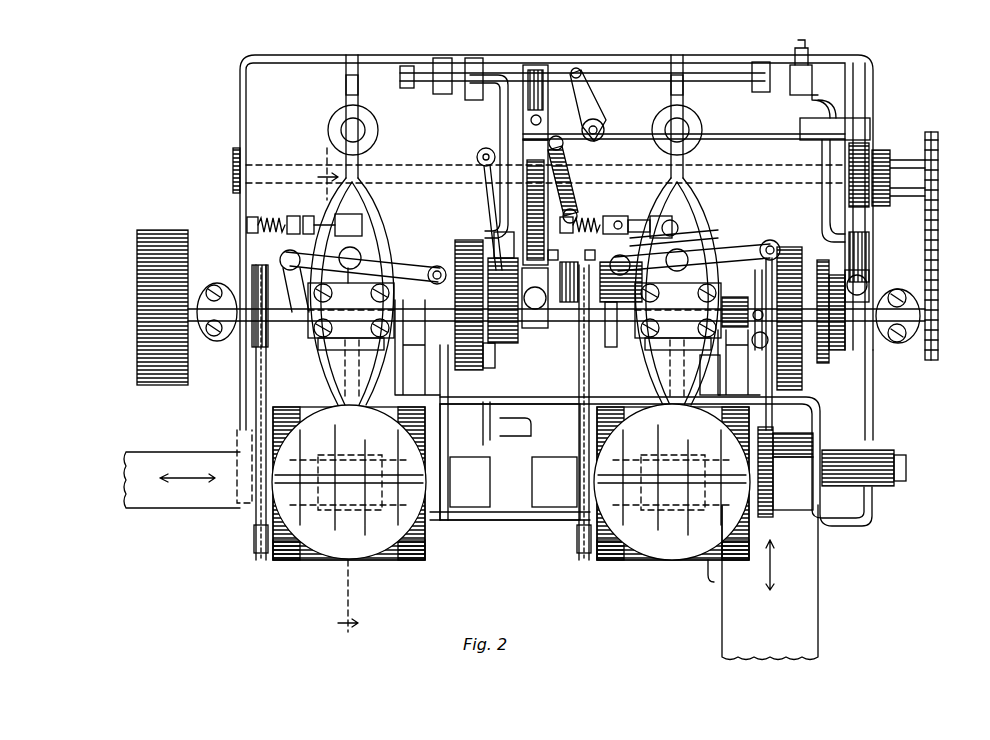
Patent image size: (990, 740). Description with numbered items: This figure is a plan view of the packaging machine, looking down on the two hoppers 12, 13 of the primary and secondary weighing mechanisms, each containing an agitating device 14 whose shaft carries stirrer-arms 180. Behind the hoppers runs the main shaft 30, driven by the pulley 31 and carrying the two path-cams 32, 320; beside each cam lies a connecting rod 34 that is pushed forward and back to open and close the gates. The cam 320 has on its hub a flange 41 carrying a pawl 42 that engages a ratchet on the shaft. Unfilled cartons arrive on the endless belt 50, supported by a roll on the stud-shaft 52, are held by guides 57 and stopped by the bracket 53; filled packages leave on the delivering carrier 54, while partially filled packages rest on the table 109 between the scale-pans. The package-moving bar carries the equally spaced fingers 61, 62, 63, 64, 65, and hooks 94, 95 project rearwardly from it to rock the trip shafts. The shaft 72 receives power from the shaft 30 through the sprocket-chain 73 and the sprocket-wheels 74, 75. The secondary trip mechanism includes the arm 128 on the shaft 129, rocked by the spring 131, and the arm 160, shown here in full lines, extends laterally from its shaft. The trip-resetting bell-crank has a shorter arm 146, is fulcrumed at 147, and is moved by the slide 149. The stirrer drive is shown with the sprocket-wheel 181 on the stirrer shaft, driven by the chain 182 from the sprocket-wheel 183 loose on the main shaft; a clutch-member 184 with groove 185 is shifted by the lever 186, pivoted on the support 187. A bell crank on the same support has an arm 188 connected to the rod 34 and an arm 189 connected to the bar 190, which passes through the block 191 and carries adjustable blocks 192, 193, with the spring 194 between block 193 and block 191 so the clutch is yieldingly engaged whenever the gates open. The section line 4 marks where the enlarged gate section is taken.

The section line 4— 4 is at (337, 398).
The hopper 12 is at (733, 570).
The hopper 13 is at (283, 560).
The agitating device 14 is at (618, 562).
The shaft 30 is at (752, 264).
The pulley 31 is at (155, 388).
The path-cam 32 is at (786, 246).
The connecting rod 34 is at (775, 392).
The flange 41 is at (502, 352).
The pawl 42 is at (504, 262).
The endless belt 50 is at (806, 637).
The stud-shaft 52 is at (906, 463).
The bracket 53 is at (822, 440).
The delivering carrier 54 is at (162, 509).
The guides 57 is at (713, 584).
The finger 61 is at (822, 418).
The finger 62 is at (720, 360).
The finger 63 is at (576, 433).
The finger 64 is at (498, 456).
The finger 65 is at (340, 404).
The shaft 72 is at (250, 172).
The sprocket-chain 73 is at (941, 246).
The sprocket-wheel 74 is at (905, 345).
The sprocket-wheel 75 is at (907, 202).
The hook 94 is at (744, 366).
The hook 95 is at (432, 372).
The table 109 is at (500, 514).
The arm 128 is at (530, 62).
The shaft 129 is at (484, 148).
The spring 131 is at (518, 188).
The shorter arm 146 is at (596, 100).
The fulcrum 147 is at (600, 140).
The slide 149 is at (490, 372).
The arm 160 is at (850, 118).
The stirrer-arms 180 is at (638, 560).
The sprocket-wheel 181 is at (576, 540).
The chain 182 is at (584, 372).
The sprocket-wheel 183 is at (252, 345).
The clutch-member 184 is at (628, 208).
The groove 185 is at (614, 348).
The lever 186 is at (688, 218).
The support 187 is at (678, 316).
The bell-crank arm 188 is at (720, 254).
The bell-crank arm 189 is at (706, 236).
The bar 190 is at (690, 175).
The block 191 is at (580, 170).
The adjustable block 192 is at (605, 232).
The adjustable block 193 is at (563, 247).
The spring 194 is at (589, 247).
The path-cam 320 is at (465, 245).